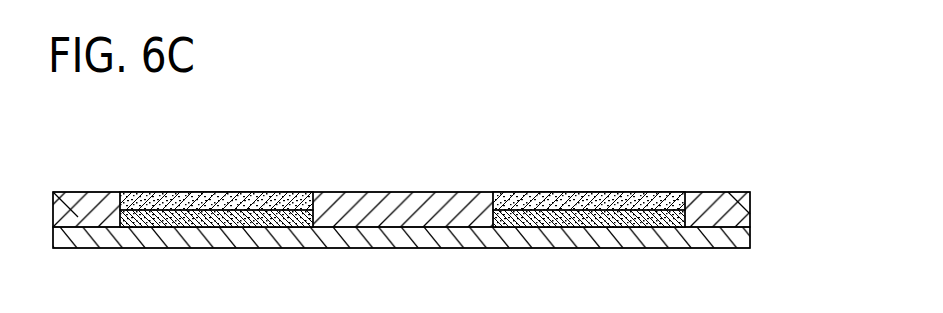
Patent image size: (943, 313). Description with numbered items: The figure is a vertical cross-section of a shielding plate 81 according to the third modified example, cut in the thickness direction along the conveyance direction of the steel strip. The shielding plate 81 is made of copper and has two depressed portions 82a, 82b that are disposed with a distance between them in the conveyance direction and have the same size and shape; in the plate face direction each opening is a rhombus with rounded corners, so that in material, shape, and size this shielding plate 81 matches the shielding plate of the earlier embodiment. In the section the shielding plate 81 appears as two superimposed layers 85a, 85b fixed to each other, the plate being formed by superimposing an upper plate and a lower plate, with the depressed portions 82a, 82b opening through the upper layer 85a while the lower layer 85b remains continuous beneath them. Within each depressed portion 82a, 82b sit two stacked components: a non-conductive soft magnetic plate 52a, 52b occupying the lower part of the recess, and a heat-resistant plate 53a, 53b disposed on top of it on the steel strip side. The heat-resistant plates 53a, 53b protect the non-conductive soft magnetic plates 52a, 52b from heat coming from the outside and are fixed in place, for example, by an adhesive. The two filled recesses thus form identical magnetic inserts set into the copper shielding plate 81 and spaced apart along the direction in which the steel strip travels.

The shielding plate 81 is at (408, 178).
The depressed portion 82a is at (214, 166).
The depressed portion 82b is at (589, 167).
The non-conductive soft magnetic plate 52a is at (196, 215).
The non-conductive soft magnetic plate 52b is at (572, 215).
The heat-resistant plate 53a is at (259, 203).
The heat-resistant plate 53b is at (640, 203).
The upper substrate layer 85a is at (738, 203).
The lower substrate layer 85b is at (738, 240).